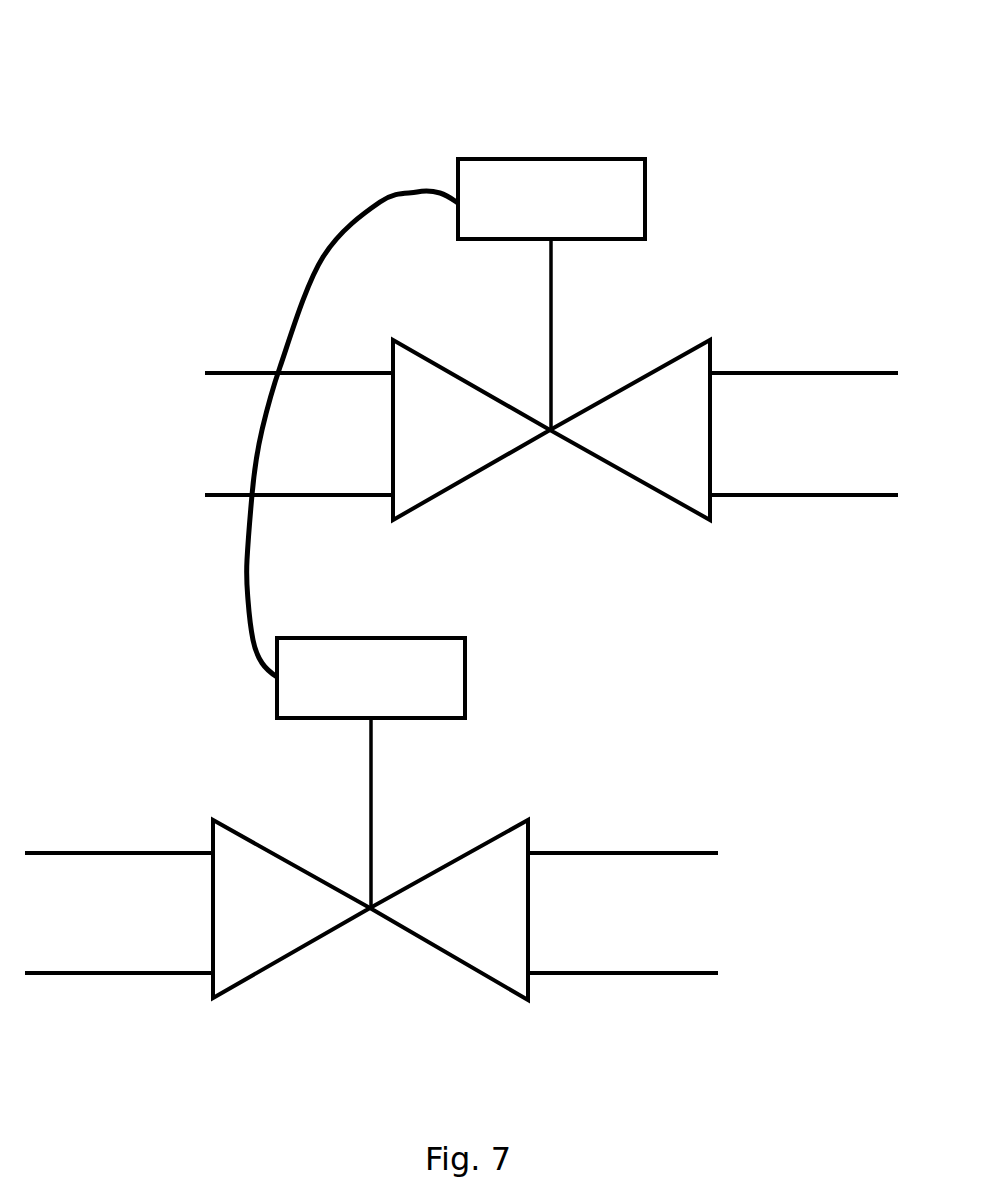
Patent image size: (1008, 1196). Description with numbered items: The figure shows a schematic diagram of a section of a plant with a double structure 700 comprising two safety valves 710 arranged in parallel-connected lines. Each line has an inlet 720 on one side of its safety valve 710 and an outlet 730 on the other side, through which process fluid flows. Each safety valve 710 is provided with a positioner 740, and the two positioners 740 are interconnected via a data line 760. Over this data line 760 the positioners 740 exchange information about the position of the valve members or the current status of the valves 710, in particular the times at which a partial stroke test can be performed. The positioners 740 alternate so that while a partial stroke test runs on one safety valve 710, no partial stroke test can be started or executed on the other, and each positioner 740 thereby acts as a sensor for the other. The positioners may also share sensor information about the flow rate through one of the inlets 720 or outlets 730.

The valve control system 700 is at (392, 97).
The safety valve 710 is at (552, 362).
The inlet 720 is at (292, 447).
The outlet 730 is at (797, 477).
The positioner 740 is at (583, 162).
The data line 760 is at (323, 258).